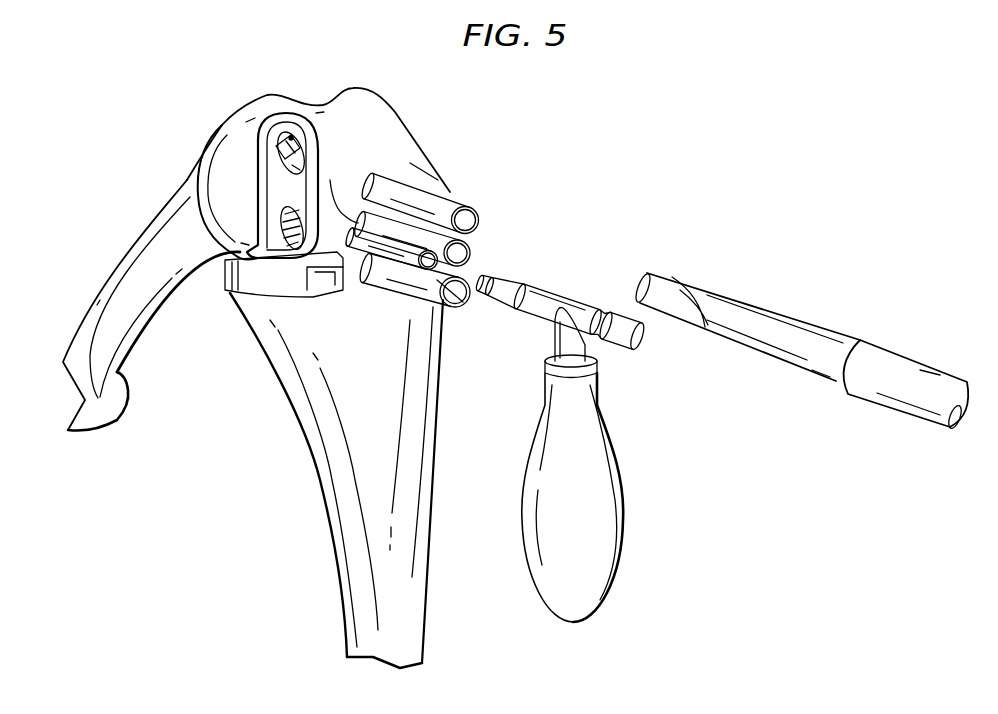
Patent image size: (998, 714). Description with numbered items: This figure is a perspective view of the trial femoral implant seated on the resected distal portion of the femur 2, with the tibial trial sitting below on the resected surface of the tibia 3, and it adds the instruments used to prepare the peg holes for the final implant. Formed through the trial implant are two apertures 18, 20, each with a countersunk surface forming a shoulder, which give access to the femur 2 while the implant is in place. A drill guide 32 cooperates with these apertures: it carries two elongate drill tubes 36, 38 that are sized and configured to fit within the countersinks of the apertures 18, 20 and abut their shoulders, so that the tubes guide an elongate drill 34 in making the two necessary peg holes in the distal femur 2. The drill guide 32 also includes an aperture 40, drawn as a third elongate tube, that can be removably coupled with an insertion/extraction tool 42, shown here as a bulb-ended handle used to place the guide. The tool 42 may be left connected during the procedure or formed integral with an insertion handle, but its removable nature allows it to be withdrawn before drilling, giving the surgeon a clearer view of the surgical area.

The femur 2 is at (222, 158).
The tibia 3 is at (342, 493).
The aperture 18 is at (266, 150).
The aperture 20 is at (282, 247).
The drill guide 32 is at (457, 193).
The drill 34 is at (892, 363).
The drill tube 36 is at (418, 200).
The drill tube 38 is at (460, 302).
The aperture 40 is at (432, 260).
The insertion/extraction tool 42 is at (603, 563).